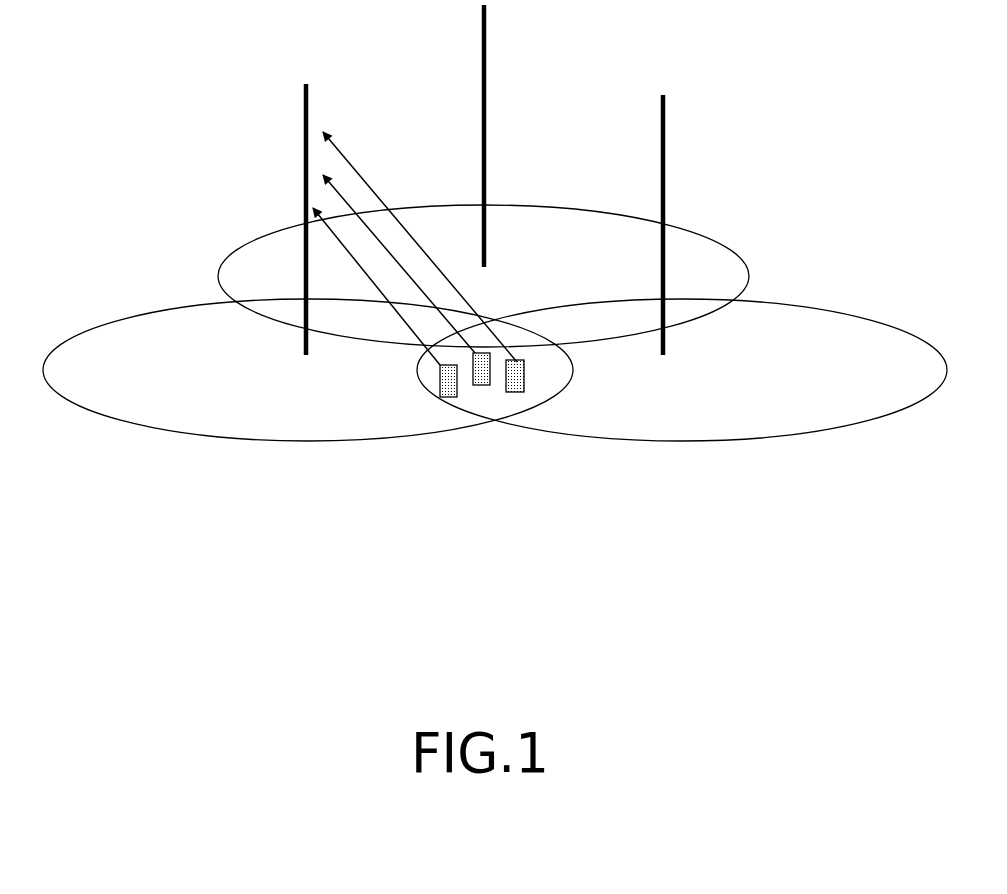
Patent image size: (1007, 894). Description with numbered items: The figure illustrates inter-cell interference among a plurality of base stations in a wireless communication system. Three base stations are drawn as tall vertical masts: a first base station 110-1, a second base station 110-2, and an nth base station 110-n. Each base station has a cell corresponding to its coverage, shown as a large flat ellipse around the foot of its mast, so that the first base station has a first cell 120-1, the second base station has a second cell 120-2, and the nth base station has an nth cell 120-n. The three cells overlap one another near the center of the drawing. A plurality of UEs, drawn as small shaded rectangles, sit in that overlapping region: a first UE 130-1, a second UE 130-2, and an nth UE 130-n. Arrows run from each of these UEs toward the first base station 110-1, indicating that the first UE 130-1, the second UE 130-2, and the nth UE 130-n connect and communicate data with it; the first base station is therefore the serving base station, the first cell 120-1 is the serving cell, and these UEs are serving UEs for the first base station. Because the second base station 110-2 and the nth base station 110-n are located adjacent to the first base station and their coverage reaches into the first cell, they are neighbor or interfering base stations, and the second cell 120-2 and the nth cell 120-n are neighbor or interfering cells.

The first base station 110-1 is at (308, 108).
The second base station 110-2 is at (665, 120).
The nth base station 110-n is at (487, 30).
The first cell 120-1 is at (125, 320).
The second cell 120-2 is at (825, 310).
The nth cell 120-n is at (560, 207).
The first UE 130-1 is at (438, 389).
The second UE 130-2 is at (480, 386).
The nth UE 130-n is at (511, 393).